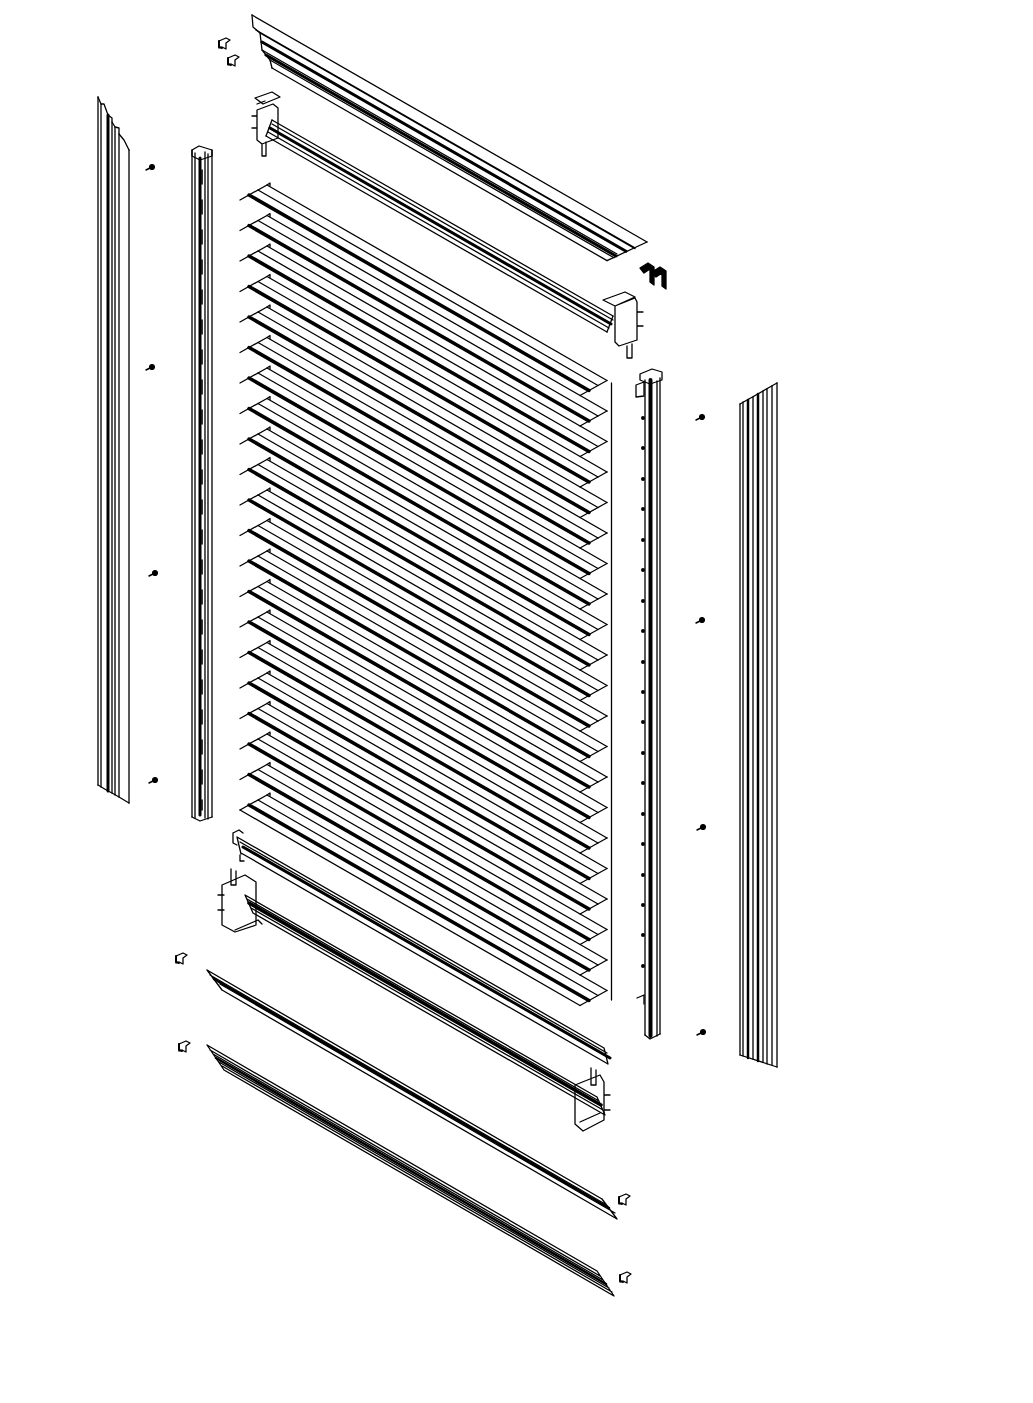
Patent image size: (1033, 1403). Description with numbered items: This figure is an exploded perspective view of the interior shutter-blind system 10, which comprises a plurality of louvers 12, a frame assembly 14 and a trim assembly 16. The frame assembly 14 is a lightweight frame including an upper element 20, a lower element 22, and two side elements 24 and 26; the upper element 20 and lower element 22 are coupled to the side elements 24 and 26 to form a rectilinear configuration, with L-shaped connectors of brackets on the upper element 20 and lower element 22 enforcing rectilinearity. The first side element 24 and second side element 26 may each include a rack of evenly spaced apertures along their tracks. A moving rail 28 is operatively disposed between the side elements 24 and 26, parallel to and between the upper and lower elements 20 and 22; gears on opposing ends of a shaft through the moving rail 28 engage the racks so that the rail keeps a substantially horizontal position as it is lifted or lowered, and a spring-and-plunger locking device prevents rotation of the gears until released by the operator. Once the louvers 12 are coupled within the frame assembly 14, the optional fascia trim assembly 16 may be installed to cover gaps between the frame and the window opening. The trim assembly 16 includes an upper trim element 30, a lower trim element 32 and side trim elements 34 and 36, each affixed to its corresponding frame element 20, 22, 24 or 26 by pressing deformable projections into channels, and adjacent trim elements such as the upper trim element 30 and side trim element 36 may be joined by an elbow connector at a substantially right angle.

The shutter-blind system 10 is at (683, 121).
The louvers 12 is at (233, 146).
The frame assembly 14 is at (685, 378).
The trim assembly 16 is at (812, 556).
The upper element 20 is at (475, 238).
The lower element 22 is at (508, 1068).
The first side element 24 is at (198, 790).
The second side element 26 is at (655, 890).
The moving rail 28 is at (556, 1032).
The upper trim element 30 is at (441, 132).
The lower trim element 32 is at (168, 927).
The side trim element 34 is at (107, 623).
The side trim element 36 is at (768, 713).